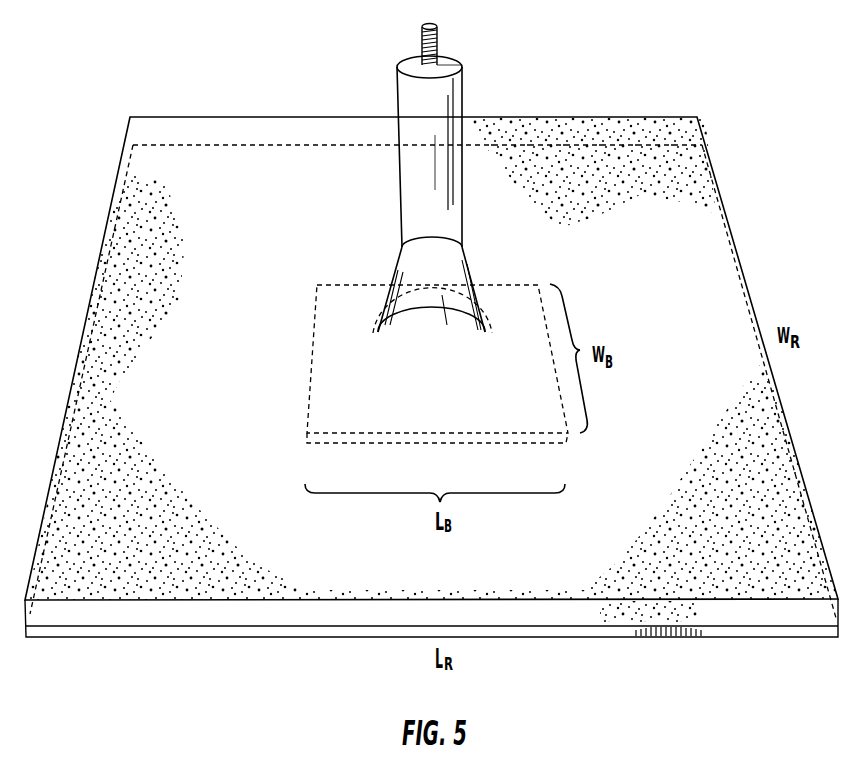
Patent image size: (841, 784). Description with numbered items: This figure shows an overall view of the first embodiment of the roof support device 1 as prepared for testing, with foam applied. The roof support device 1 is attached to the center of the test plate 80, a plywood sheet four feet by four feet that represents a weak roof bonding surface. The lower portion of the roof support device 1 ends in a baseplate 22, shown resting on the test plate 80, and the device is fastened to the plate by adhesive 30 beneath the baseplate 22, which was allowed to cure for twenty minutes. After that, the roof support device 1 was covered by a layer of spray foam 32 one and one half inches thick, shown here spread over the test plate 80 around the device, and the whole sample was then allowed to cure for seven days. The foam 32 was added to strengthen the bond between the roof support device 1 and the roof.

The roof support device 1 is at (482, 90).
The baseplate 22 is at (333, 407).
The adhesive 30 is at (323, 445).
The foam 32 is at (105, 403).
The test plate 80 is at (172, 637).